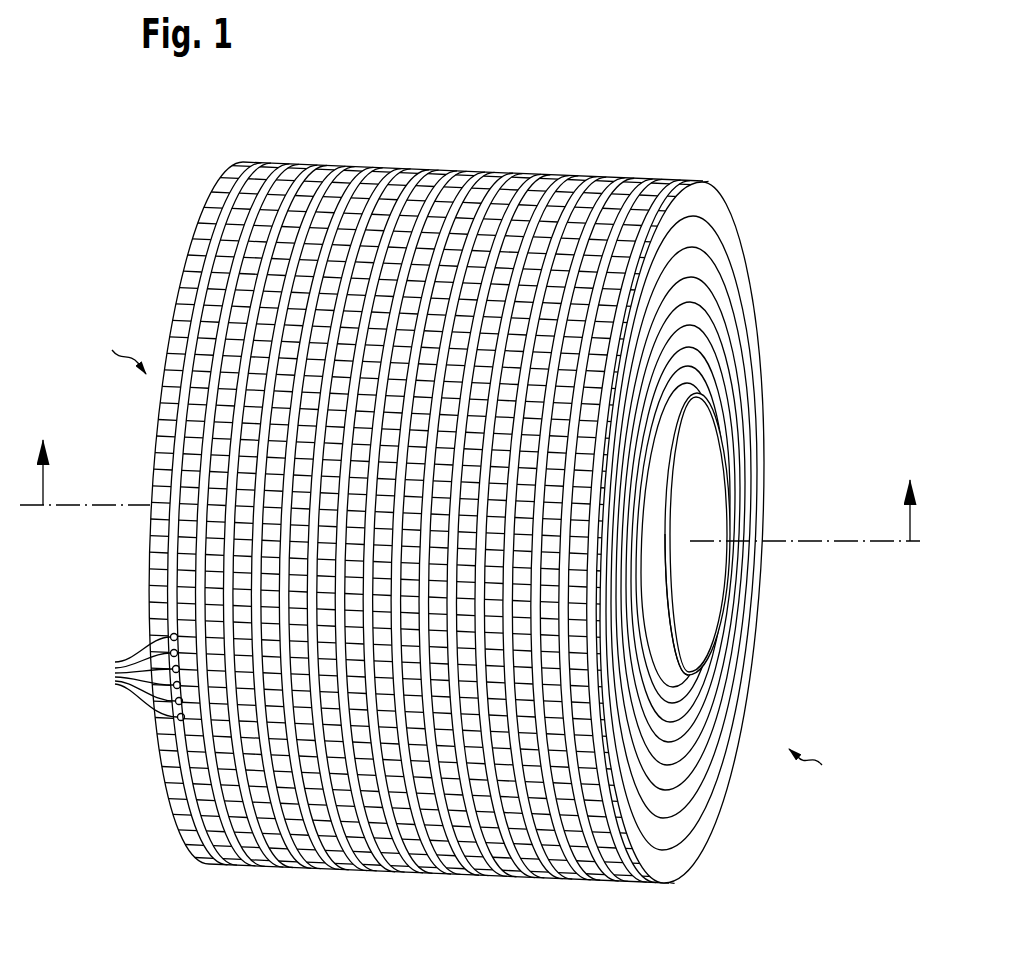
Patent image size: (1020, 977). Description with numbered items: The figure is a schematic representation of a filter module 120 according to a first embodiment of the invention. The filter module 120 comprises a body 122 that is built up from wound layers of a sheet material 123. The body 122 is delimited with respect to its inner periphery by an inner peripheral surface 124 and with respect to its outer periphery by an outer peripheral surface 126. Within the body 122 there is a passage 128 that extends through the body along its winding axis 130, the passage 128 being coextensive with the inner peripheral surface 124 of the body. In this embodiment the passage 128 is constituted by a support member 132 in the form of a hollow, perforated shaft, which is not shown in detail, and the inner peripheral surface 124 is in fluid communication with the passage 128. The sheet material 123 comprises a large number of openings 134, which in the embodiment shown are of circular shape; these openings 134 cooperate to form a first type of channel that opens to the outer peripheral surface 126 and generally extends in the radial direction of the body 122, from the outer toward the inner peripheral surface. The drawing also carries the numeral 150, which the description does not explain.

The filter module 120 is at (805, 300).
The body 122 is at (777, 248).
The sheet material 123 is at (690, 849).
The inner peripheral surface 124 is at (696, 644).
The outer peripheral surface 126 is at (281, 876).
The passage 128 is at (702, 519).
The winding axis 130 is at (93, 504).
The support member 132 is at (697, 393).
The openings 134 is at (126, 677).
The direction arrow 150 is at (465, 558).